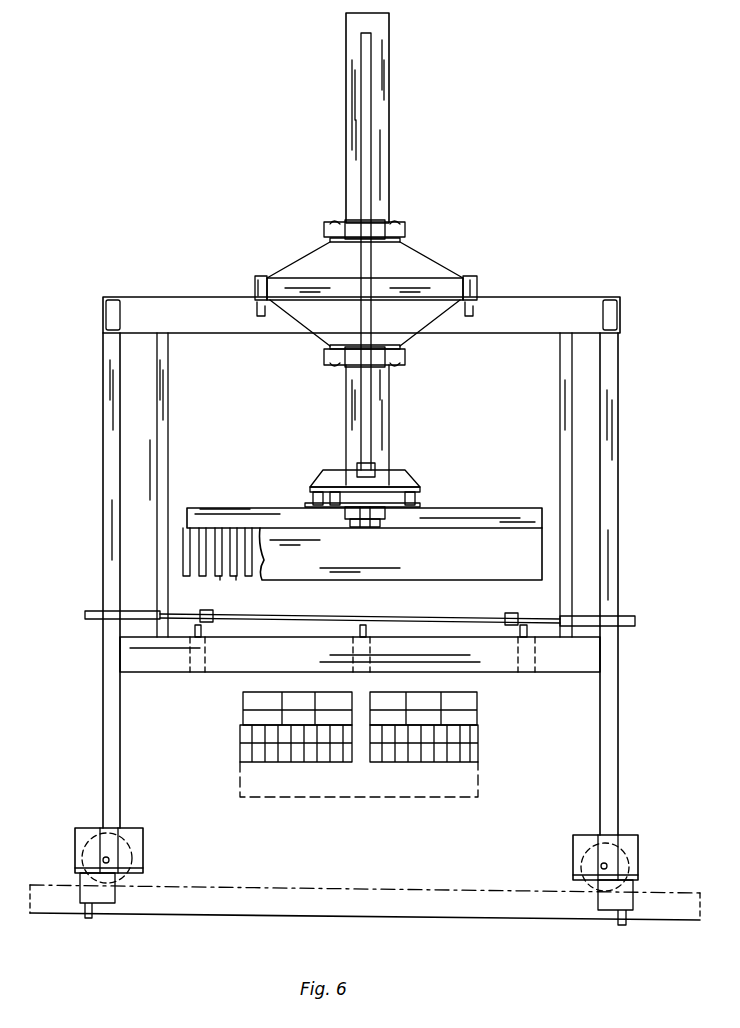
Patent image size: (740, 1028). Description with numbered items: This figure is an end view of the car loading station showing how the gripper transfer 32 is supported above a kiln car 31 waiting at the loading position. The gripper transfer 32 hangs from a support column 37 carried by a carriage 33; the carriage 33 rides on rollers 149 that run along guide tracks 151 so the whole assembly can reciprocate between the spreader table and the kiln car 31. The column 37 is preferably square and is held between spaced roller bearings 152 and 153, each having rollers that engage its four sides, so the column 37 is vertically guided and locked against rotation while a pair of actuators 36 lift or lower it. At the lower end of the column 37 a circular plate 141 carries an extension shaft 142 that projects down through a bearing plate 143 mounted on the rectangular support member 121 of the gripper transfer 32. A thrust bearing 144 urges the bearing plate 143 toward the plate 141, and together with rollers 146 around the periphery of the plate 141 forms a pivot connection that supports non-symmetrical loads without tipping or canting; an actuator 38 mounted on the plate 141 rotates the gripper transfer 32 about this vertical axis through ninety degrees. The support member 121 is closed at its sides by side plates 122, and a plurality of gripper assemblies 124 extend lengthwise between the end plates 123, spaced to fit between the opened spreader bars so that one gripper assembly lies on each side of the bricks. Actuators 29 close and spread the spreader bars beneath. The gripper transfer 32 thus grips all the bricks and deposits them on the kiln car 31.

The actuators 36 is at (372, 128).
The roller bearing 152 is at (378, 222).
The carriage 33 is at (428, 285).
The rollers 149 is at (478, 280).
The guide tracks 151 is at (478, 306).
The roller bearing 153 is at (388, 365).
The support column 37 is at (378, 412).
The circular plate 141 is at (404, 485).
The actuator 38 is at (335, 490).
The rollers 146 is at (312, 497).
The bearing plate 143 is at (418, 504).
The thrust bearing 144 is at (345, 514).
The extension shaft 142 is at (383, 503).
The gripper transfer 32 is at (477, 508).
The end plates 123 is at (373, 580).
The side plates 122 is at (548, 545).
The support member 121 is at (247, 508).
The gripper assemblies 124 is at (222, 575).
The actuators 29 is at (630, 620).
The kiln car 31 is at (403, 797).